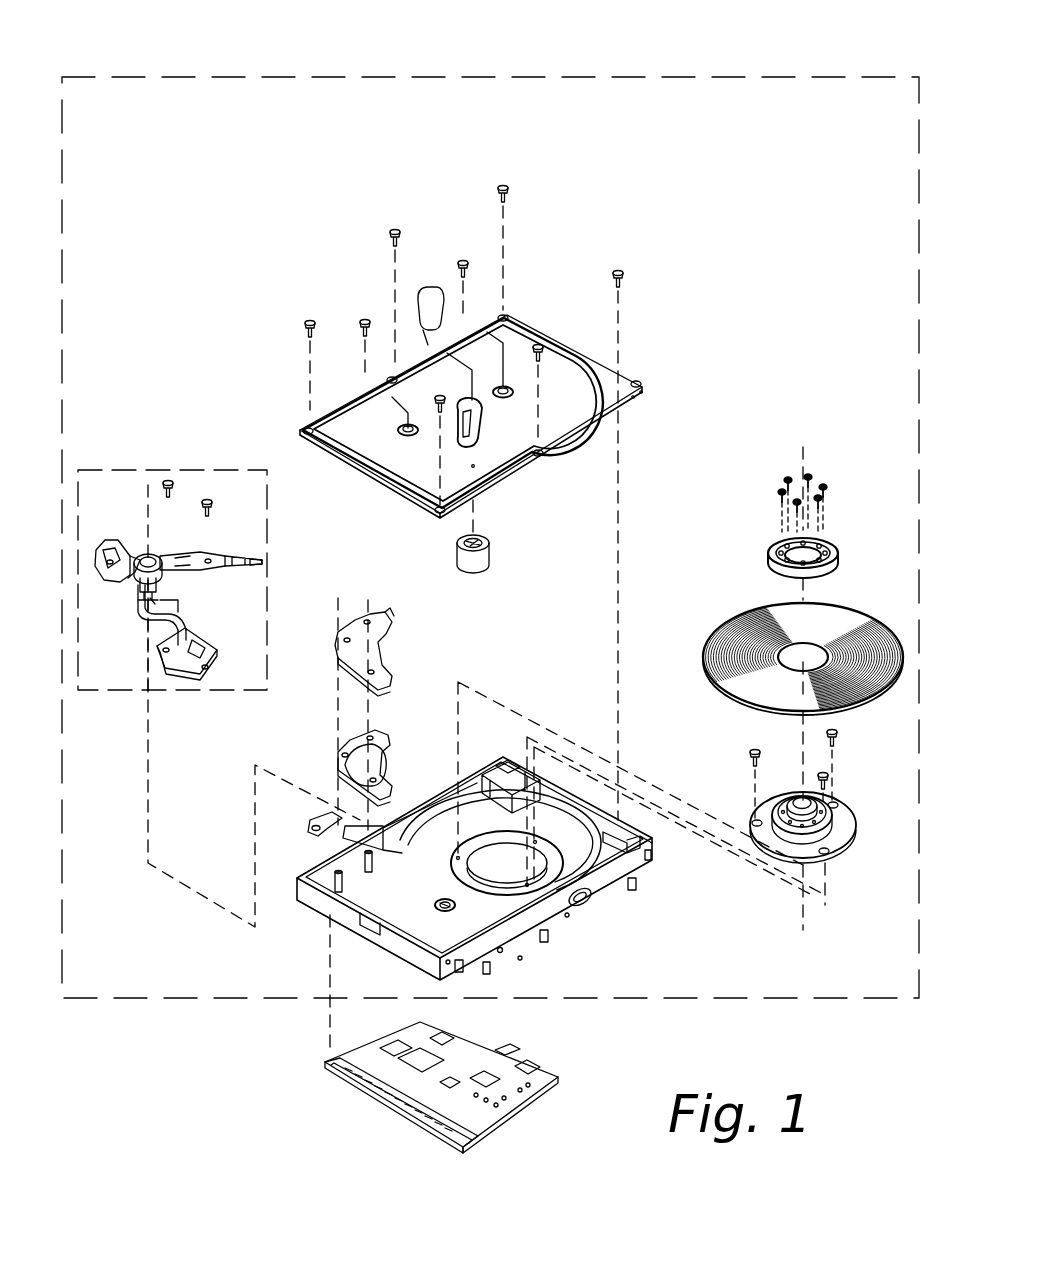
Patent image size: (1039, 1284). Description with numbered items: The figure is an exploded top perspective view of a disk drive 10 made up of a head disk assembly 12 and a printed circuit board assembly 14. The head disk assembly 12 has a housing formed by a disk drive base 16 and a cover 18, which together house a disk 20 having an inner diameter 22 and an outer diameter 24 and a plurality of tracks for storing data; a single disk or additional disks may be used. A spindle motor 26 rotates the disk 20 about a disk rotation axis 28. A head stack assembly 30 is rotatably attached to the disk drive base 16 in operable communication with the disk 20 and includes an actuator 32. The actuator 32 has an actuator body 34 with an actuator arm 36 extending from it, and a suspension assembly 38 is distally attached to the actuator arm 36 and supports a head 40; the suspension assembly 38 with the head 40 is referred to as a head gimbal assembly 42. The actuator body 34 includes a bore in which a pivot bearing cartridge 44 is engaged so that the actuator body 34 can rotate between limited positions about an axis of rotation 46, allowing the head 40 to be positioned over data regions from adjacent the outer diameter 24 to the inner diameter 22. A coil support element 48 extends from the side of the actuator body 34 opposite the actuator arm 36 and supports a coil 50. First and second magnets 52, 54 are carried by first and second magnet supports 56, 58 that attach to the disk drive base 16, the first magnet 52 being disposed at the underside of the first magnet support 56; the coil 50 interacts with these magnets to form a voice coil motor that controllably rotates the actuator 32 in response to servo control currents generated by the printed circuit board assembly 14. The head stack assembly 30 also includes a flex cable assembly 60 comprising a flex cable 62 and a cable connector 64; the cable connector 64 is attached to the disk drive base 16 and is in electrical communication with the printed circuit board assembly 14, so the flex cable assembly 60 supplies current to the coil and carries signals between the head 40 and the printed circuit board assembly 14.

The disk drive 10 is at (246, 54).
The head disk assembly 12 is at (372, 77).
The printed circuit board assembly 14 is at (543, 1087).
The disk drive base 16 is at (525, 940).
The cover 18 is at (562, 418).
The disk 20 is at (800, 647).
The inner diameter 22 is at (798, 664).
The outer diameter 24 is at (717, 687).
The spindle motor 26 is at (831, 688).
The disk rotation axis 28 is at (803, 925).
The head stack assembly 30 is at (170, 557).
The actuator 32 is at (137, 550).
The actuator body 34 is at (132, 547).
The actuator arm 36 is at (177, 555).
The suspension assembly 38 is at (229, 546).
The head 40 is at (259, 547).
The head gimbal assembly 42 is at (259, 574).
The pivot bearing cartridge 44 is at (148, 556).
The axis of rotation 46 is at (152, 730).
The coil support element 48 is at (97, 560).
The coil 50 is at (103, 543).
The first magnet 52 is at (379, 652).
The second magnet 54 is at (390, 765).
The first magnet support 56 is at (352, 665).
The second magnet support 58 is at (377, 787).
The flex cable assembly 60 is at (140, 618).
The flex cable 62 is at (137, 610).
The cable connector 64 is at (213, 660).